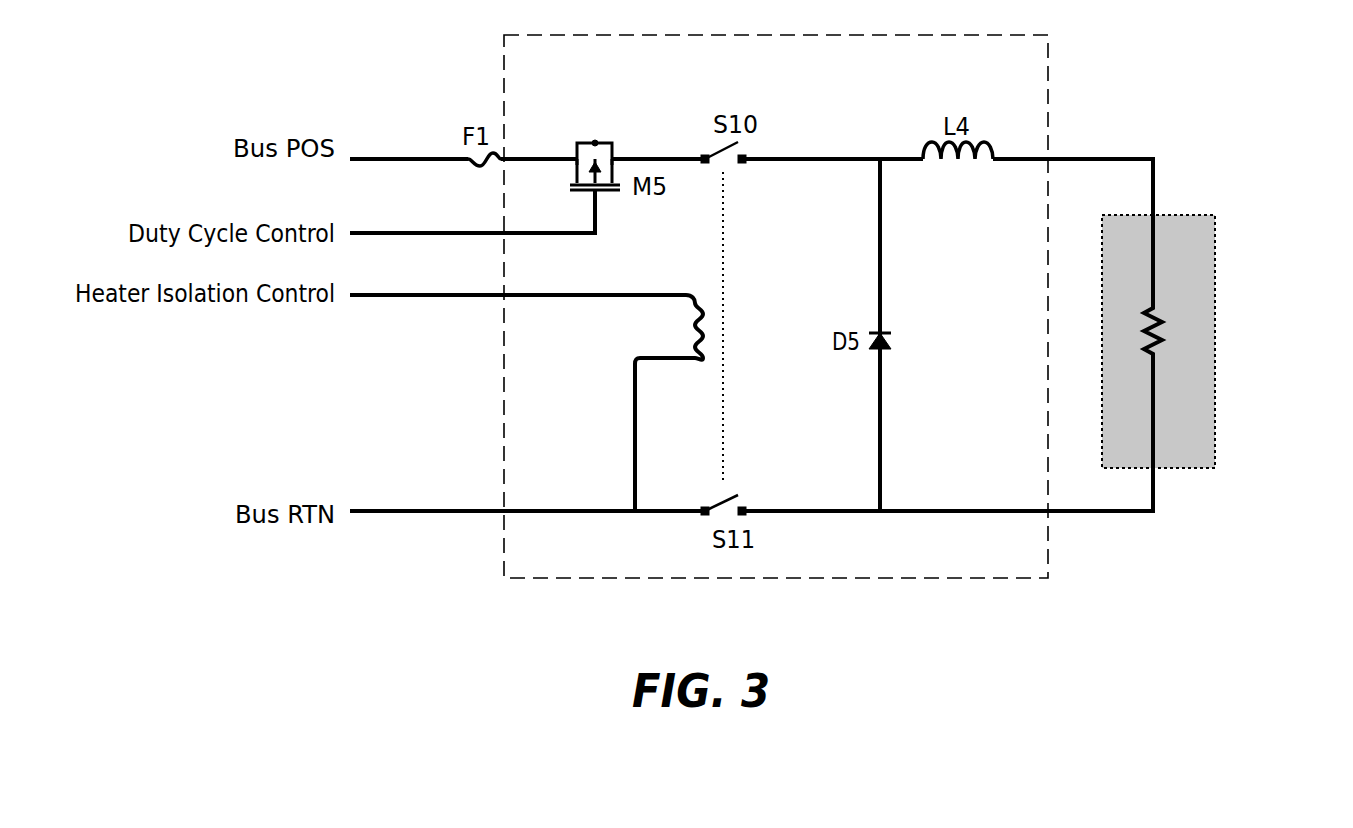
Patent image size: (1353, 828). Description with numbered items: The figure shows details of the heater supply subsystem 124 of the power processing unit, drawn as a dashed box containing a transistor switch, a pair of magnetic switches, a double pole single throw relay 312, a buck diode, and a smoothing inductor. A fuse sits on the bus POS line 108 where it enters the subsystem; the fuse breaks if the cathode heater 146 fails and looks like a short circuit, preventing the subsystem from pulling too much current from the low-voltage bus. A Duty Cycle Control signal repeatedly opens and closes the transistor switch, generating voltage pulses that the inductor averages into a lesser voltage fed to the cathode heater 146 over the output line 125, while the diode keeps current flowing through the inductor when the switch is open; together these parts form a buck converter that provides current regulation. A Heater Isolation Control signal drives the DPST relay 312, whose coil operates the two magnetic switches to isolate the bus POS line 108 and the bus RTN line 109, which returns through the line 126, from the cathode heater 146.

The bus POS line 108 is at (376, 158).
The bus RTN line 109 is at (375, 514).
The heater supply subsystem 124 is at (865, 71).
The heater supply output line 125 is at (1057, 160).
The heater supply return line 126 is at (1058, 510).
The cathode heater 146 is at (1183, 214).
The DPST relay 312 is at (688, 275).